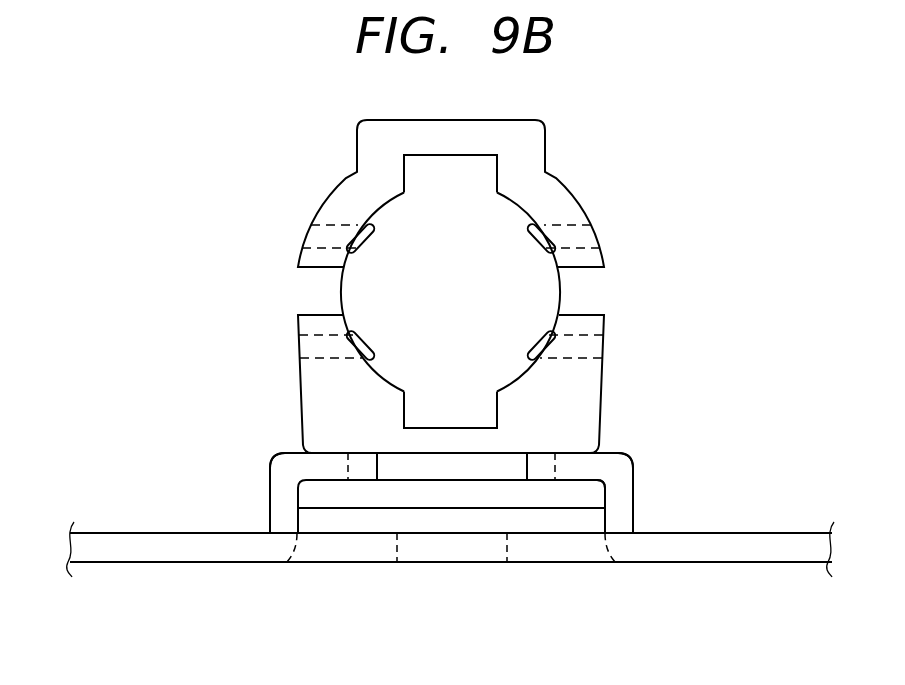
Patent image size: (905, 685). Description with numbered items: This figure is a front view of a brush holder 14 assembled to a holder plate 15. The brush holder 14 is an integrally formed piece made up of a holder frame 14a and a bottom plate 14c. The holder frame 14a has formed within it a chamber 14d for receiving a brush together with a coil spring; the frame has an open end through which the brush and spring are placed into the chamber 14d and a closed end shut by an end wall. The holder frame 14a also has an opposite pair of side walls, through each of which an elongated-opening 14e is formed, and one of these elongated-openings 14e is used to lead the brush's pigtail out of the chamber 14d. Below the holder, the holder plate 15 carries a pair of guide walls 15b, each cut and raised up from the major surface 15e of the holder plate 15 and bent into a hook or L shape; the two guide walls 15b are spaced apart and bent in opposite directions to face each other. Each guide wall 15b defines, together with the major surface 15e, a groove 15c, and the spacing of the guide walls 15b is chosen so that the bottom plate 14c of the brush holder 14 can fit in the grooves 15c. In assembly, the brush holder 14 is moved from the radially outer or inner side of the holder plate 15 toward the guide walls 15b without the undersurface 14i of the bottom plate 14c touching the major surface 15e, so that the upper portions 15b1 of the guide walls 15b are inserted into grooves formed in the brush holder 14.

The brush holder 14 is at (317, 128).
The holder frame 14a is at (553, 202).
The chamber 14d is at (471, 305).
The elongated-opening 14e is at (585, 293).
The bottom plate 14c is at (382, 492).
The undersurface 14i is at (447, 520).
The holder plate 15 is at (755, 552).
The guide wall 15b is at (282, 508).
The upper portion of guide wall 15b1 is at (312, 472).
The major surface 15e is at (333, 521).
The groove 15c is at (588, 492).